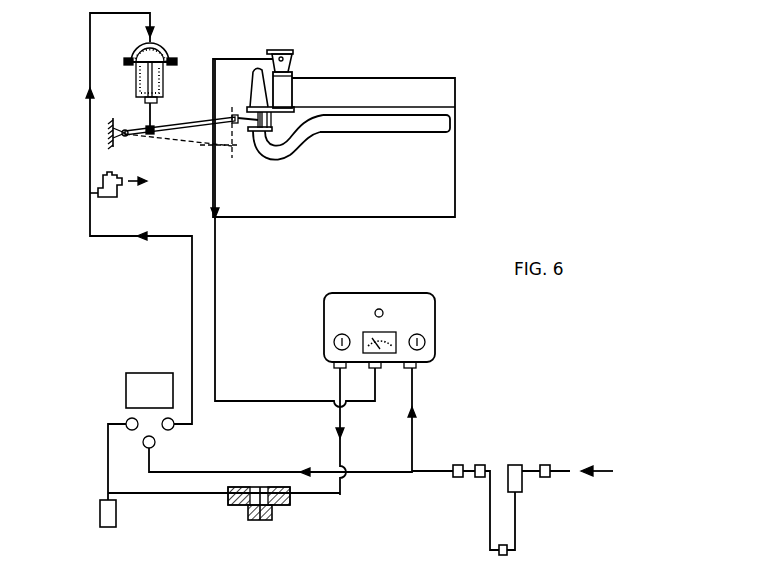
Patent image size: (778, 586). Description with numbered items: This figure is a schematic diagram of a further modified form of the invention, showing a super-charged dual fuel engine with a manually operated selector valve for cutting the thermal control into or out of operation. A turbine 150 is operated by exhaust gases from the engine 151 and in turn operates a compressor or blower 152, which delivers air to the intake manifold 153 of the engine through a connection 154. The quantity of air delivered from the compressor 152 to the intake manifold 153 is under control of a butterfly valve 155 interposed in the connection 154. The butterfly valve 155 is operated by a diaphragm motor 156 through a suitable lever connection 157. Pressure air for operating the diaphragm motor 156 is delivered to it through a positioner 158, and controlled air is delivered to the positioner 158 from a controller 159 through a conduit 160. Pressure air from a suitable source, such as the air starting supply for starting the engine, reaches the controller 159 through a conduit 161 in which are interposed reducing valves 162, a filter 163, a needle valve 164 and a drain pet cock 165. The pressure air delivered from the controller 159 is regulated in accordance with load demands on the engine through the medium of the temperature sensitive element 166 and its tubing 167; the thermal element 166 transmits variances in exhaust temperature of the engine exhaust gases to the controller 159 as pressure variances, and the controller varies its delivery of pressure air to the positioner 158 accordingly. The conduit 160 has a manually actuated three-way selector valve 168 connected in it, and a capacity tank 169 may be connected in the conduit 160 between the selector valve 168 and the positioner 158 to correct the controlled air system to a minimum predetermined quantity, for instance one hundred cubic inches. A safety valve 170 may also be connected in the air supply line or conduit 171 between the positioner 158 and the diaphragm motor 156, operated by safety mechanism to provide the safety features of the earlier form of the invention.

The turbine 150 is at (283, 88).
The engine 151 is at (303, 195).
The compressor 152 is at (258, 92).
The intake manifold 153 is at (360, 123).
The connection 154 is at (293, 132).
The butterfly valve 155 is at (255, 133).
The diaphragm motor 156 is at (163, 96).
The lever connection 157 is at (198, 128).
The positioner 158 is at (151, 382).
The controller 159 is at (353, 307).
The conduit 160 is at (192, 495).
The conduit 161 is at (433, 470).
The reducing valves 162 is at (480, 463).
The filter 163 is at (518, 463).
The needle valve 164 is at (548, 465).
The drain pet cock 165 is at (507, 553).
The temperature sensitive element 166 is at (279, 50).
The tubing 167 is at (217, 265).
The three-way selector valve 168 is at (280, 503).
The capacity tank 169 is at (103, 515).
The safety valve 170 is at (118, 197).
The conduit 171 is at (168, 238).